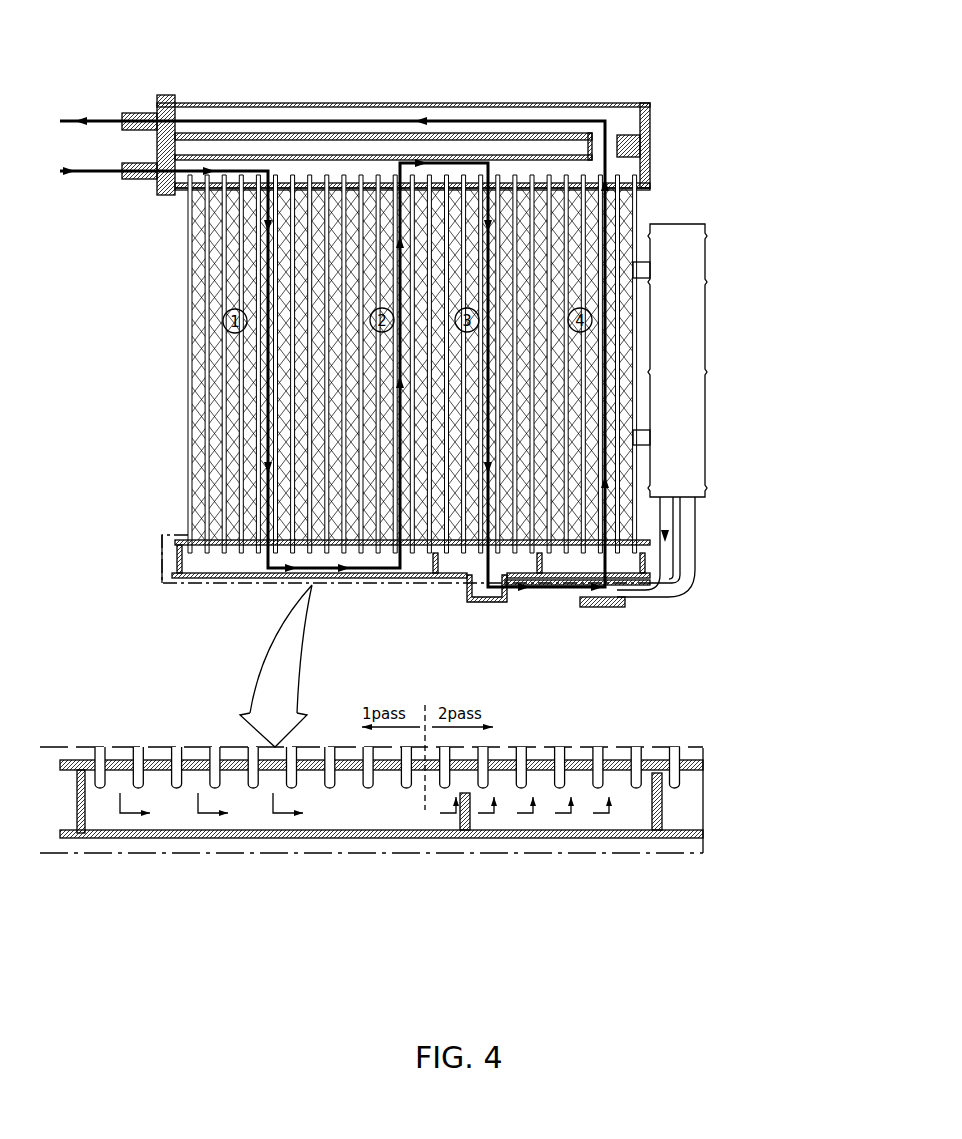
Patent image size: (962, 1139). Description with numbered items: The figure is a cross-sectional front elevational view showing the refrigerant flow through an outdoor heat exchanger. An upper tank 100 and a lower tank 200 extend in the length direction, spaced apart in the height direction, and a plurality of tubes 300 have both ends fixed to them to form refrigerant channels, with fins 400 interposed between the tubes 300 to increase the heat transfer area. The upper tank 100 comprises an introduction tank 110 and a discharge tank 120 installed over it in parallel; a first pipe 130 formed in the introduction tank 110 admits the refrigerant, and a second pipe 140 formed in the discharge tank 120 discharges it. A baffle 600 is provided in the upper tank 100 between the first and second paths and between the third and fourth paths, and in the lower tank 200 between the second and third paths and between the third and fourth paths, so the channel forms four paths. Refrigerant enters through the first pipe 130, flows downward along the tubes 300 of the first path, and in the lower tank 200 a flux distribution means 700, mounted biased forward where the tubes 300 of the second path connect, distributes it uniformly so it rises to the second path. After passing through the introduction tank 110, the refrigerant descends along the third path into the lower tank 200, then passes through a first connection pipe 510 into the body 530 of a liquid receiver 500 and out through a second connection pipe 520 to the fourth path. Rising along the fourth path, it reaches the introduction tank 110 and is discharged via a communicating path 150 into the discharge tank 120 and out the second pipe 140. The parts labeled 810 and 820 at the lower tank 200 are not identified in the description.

The upper tank 100 is at (812, 77).
The introduction tank 110 is at (630, 153).
The discharge tank 120 is at (630, 103).
The first pipe 130 is at (138, 180).
The second pipe 140 is at (135, 112).
The communicating path 150 is at (583, 143).
The lower tank 200 is at (318, 840).
The tube 300 is at (223, 362).
The fin 400 is at (200, 417).
The liquid receiver 500 is at (733, 265).
The first connection pipe 510 is at (695, 530).
The second connection pipe 520 is at (680, 555).
The body 530 is at (705, 342).
The baffle 600 is at (333, 183).
The flux distribution means 700 is at (462, 830).
The lower tank 810 is at (487, 602).
The cap 820 is at (603, 607).